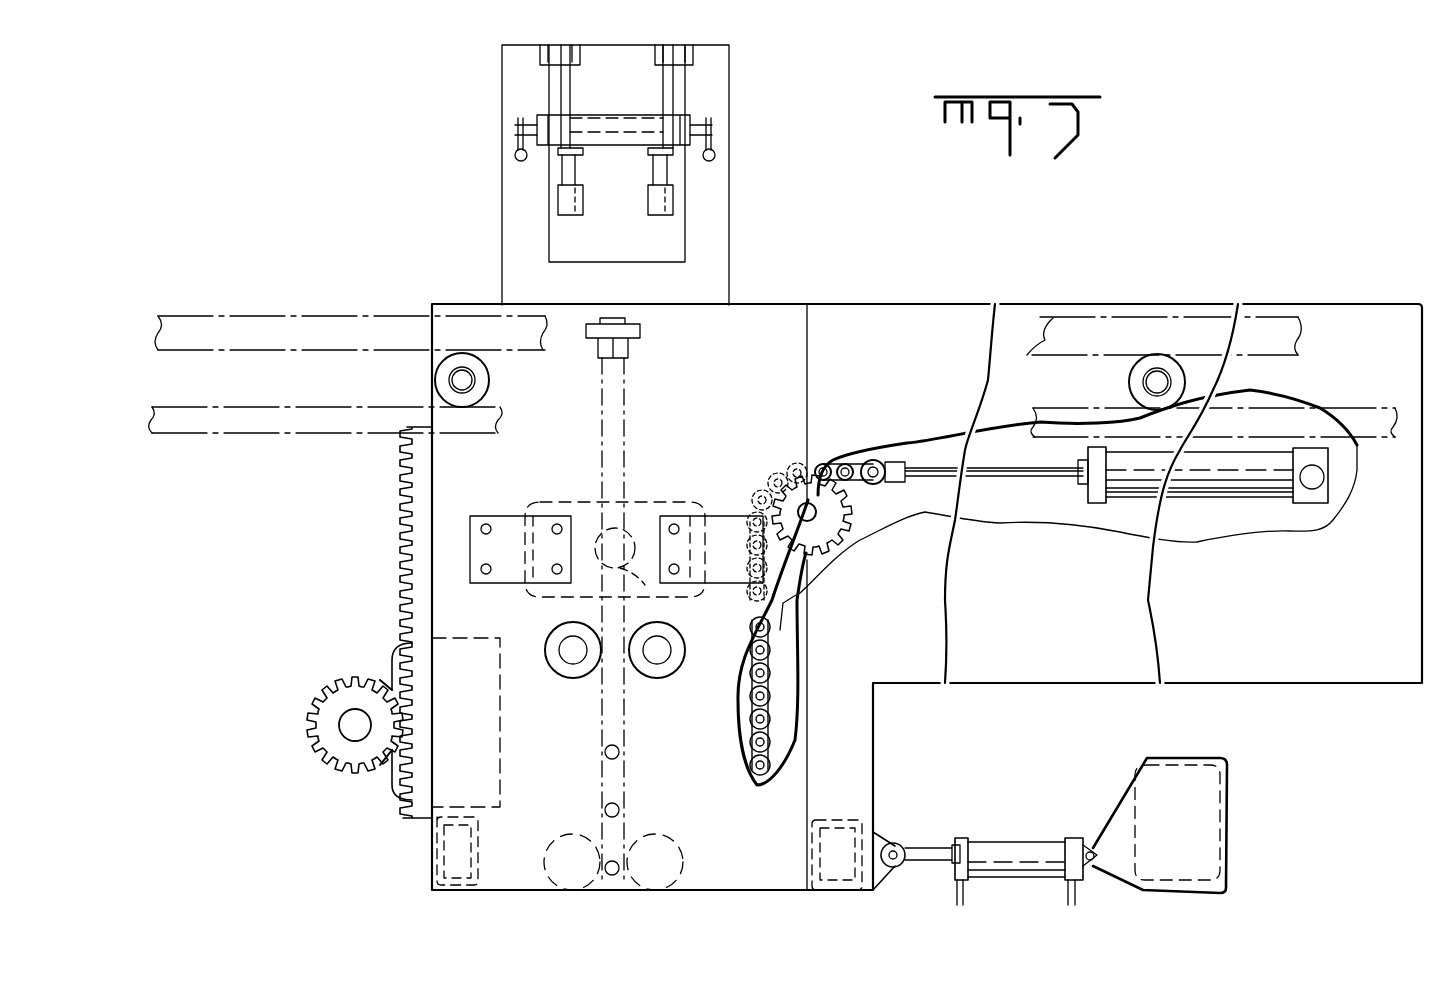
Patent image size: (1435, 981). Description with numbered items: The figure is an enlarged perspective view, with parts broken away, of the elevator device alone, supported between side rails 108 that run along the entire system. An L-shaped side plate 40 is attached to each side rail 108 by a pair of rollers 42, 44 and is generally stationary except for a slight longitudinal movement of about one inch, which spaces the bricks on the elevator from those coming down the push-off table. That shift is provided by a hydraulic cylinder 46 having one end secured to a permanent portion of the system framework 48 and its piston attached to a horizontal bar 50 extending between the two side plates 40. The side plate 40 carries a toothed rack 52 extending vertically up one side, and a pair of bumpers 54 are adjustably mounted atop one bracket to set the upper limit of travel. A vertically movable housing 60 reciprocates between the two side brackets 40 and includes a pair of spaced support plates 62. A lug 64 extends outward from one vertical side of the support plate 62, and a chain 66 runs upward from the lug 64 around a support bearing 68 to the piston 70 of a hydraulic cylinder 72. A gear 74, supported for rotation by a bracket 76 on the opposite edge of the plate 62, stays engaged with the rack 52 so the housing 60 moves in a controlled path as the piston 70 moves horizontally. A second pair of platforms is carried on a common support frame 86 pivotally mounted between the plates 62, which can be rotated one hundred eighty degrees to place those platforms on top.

The L-shaped side plate 40 is at (932, 303).
The roller 42 is at (1166, 370).
The roller 44 is at (480, 380).
The hydraulic cylinder 46 is at (1035, 850).
The system framework 48 is at (1220, 853).
The horizontal bar 50 is at (812, 893).
The toothed rack 52 is at (400, 527).
The bumpers 54 is at (648, 193).
The vertically movable housing 60 is at (440, 380).
The support plate 62 is at (727, 893).
The lug 64 is at (805, 512).
The chain 66 is at (790, 655).
The support bearing 68 is at (830, 530).
The piston 70 is at (1015, 470).
The hydraulic cylinder 72 is at (1230, 462).
The gear 74 is at (325, 725).
The bracket 76 is at (393, 690).
The support frame 86 is at (807, 388).
The side rails 108 is at (236, 306).